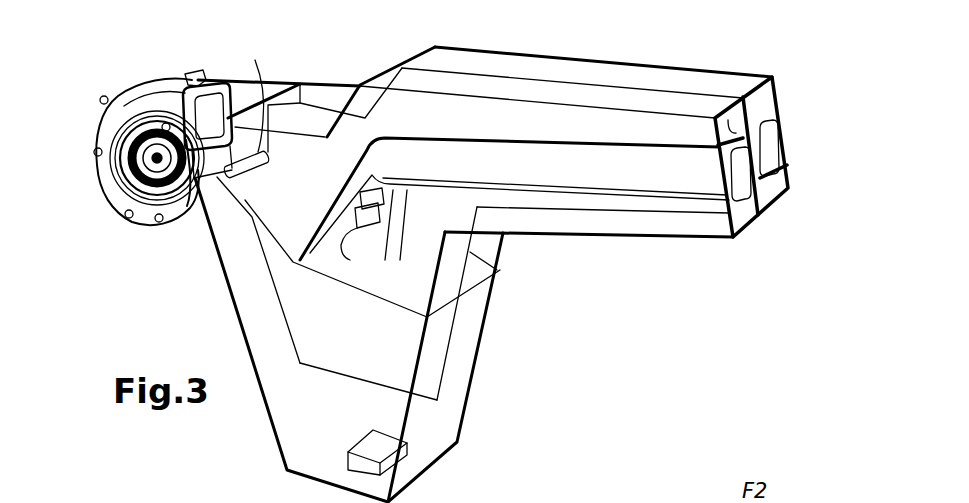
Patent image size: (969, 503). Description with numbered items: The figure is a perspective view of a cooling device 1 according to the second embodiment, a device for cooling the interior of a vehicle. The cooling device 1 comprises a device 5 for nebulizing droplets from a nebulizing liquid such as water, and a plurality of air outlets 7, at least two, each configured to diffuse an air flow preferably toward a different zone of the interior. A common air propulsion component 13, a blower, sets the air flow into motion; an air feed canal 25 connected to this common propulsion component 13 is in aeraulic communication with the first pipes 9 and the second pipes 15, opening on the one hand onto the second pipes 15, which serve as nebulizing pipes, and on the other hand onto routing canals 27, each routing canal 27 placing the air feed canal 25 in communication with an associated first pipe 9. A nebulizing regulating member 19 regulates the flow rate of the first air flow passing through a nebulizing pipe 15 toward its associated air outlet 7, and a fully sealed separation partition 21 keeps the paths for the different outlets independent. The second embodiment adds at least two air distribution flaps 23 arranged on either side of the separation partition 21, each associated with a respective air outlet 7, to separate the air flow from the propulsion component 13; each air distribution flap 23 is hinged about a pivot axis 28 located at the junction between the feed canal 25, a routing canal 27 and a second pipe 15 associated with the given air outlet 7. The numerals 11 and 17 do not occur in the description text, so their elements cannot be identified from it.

The cooling device 1 is at (700, 35).
The device for nebulizing droplets 5 is at (347, 457).
The air outlet 7 is at (776, 103).
The first pipe 9 is at (694, 495).
The air outlet opening 11 is at (770, 137).
The common air propulsion component 13 is at (102, 186).
The nebulizing pipe 15 is at (618, 495).
The air outlet opening 17 is at (767, 190).
The nebulizing regulating member 19 is at (352, 238).
The separation partition 21 is at (725, 135).
The air distribution flap 23 is at (256, 150).
The air feed canal 25 is at (238, 86).
The routing canal 27 is at (228, 233).
The pivot axis 28 is at (252, 176).